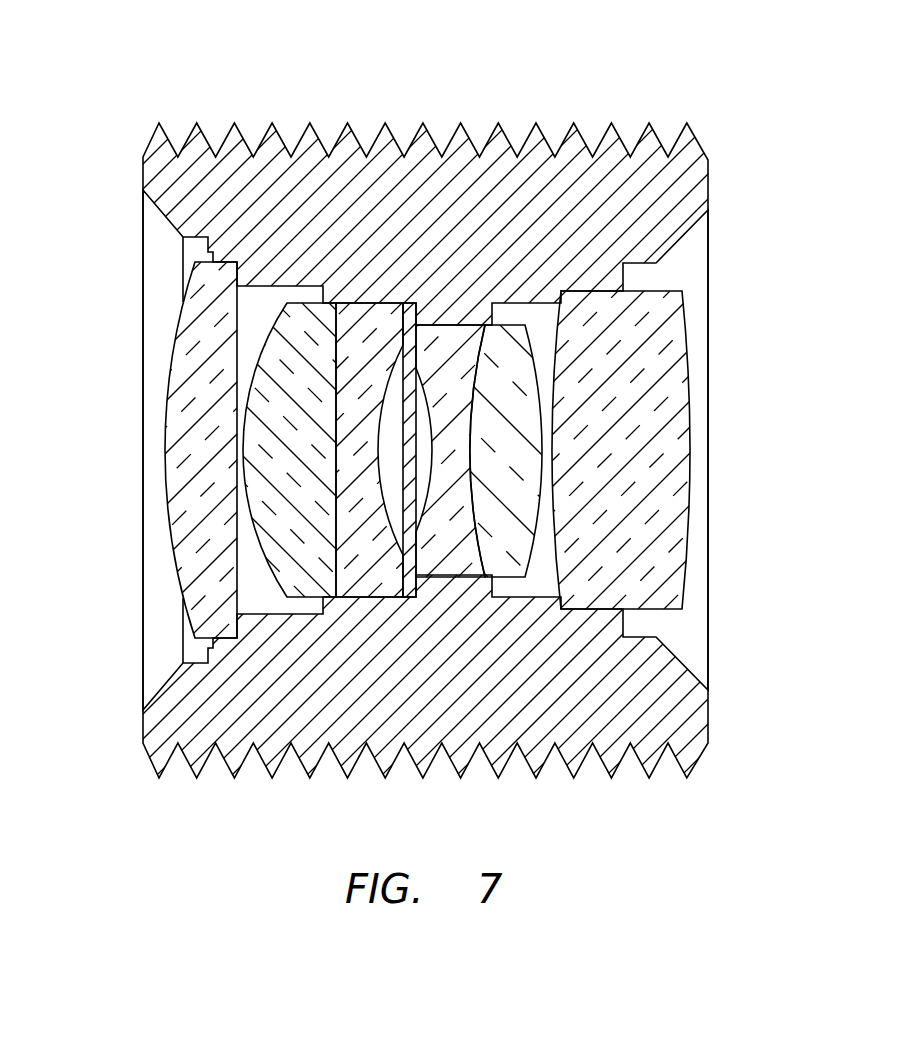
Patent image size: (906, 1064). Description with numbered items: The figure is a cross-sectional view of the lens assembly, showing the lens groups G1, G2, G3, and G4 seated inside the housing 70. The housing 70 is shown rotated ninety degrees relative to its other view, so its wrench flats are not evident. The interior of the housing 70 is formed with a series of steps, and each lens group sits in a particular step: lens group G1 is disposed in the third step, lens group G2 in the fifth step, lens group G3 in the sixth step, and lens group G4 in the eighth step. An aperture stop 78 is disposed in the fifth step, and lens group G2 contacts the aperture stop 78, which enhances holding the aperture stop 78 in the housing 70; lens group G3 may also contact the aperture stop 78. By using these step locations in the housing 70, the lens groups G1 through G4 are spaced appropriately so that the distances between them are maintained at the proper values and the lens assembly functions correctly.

The housing 70 is at (197, 96).
The aperture stop 78 is at (410, 303).
The lens group G1 is at (173, 347).
The lens group G2 is at (270, 560).
The lens group G3 is at (522, 322).
The lens group G4 is at (693, 299).